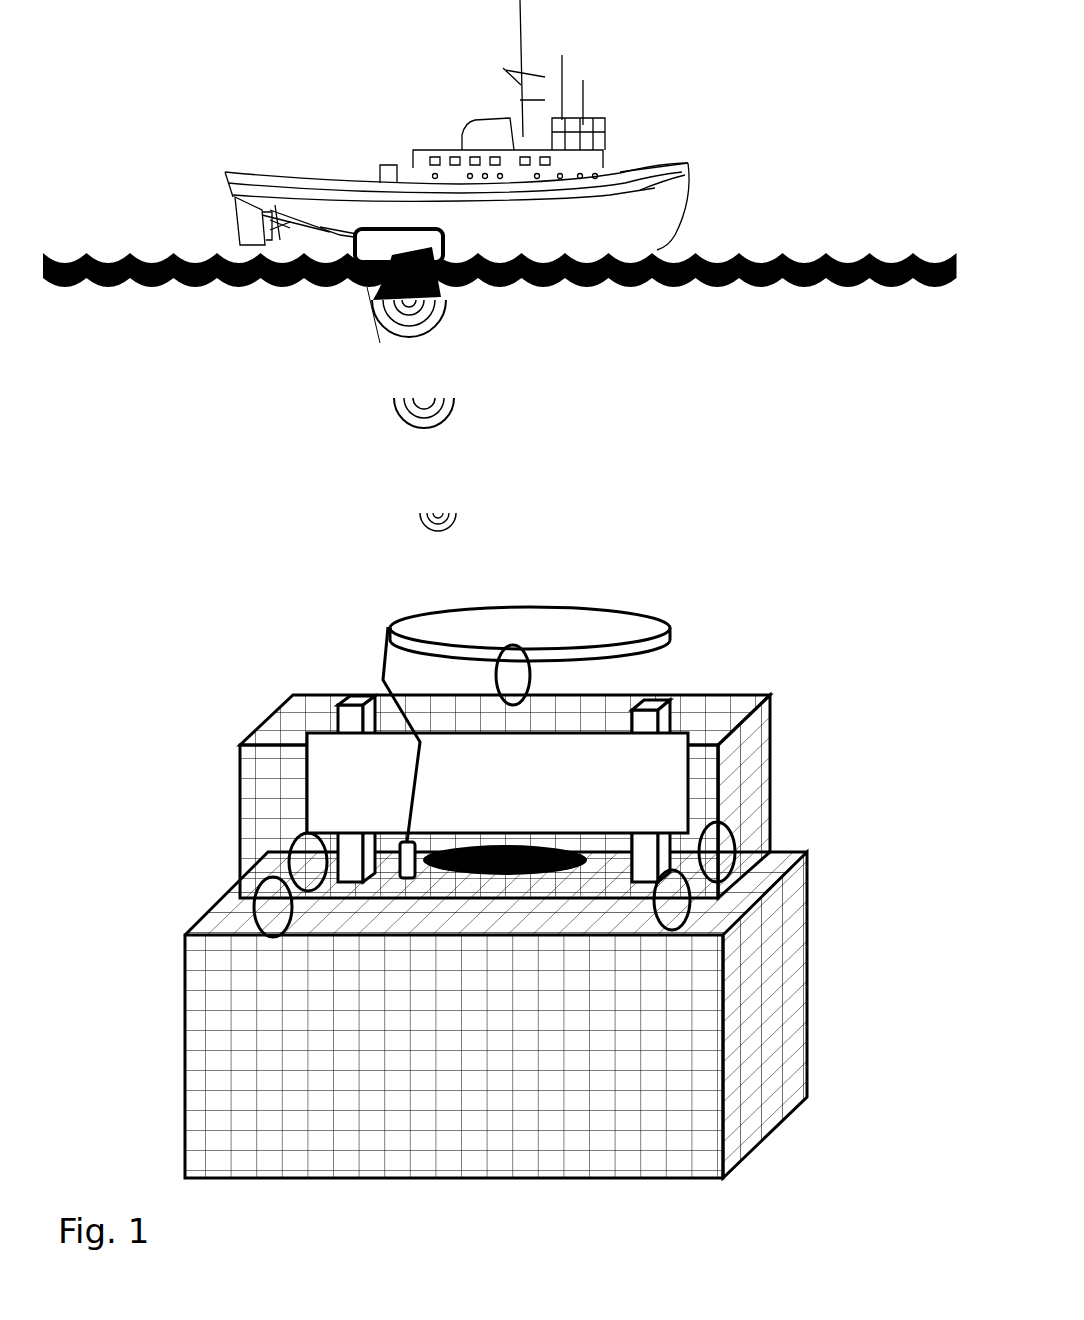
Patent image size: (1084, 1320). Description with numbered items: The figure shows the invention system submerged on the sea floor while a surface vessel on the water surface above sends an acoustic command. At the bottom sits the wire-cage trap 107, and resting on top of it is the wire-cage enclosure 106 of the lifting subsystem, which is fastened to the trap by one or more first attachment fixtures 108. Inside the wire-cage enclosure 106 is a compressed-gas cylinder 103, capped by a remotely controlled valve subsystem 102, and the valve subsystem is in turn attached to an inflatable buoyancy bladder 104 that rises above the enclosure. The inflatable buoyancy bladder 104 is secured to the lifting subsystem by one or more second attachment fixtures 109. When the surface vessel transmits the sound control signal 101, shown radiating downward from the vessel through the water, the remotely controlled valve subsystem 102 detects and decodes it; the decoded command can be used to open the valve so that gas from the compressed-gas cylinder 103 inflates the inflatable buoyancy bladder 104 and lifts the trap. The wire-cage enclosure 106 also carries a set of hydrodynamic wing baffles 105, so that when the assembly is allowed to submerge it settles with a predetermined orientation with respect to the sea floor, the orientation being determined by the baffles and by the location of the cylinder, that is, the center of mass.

The sound control signal 101 is at (426, 380).
The remotely controlled valve subsystem 102 is at (400, 863).
The compressed-gas cylinder 103 is at (600, 872).
The inflatable buoyancy bladder 104 is at (526, 724).
The hydrodynamic wing baffles 105 is at (670, 732).
The wire-cage enclosure 106 is at (261, 725).
The wire-cage trap 107 is at (778, 1125).
The first attachment fixtures 108 is at (253, 918).
The second attachment fixtures 109 is at (512, 768).